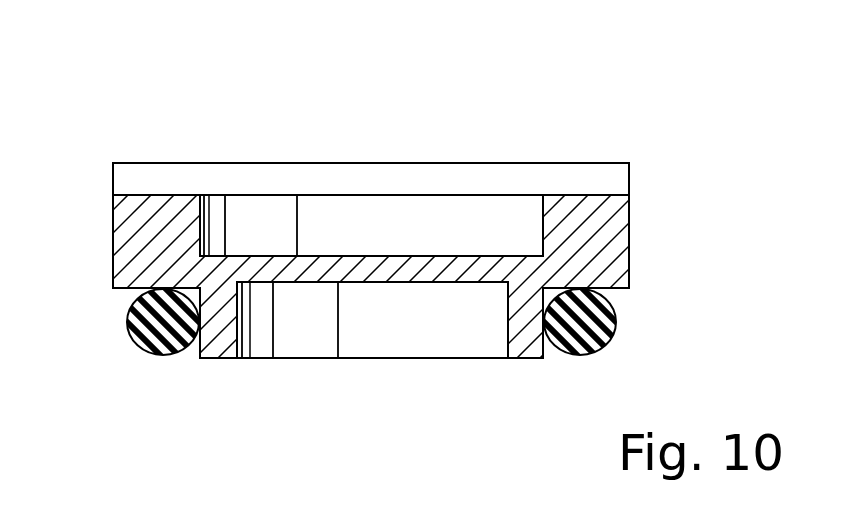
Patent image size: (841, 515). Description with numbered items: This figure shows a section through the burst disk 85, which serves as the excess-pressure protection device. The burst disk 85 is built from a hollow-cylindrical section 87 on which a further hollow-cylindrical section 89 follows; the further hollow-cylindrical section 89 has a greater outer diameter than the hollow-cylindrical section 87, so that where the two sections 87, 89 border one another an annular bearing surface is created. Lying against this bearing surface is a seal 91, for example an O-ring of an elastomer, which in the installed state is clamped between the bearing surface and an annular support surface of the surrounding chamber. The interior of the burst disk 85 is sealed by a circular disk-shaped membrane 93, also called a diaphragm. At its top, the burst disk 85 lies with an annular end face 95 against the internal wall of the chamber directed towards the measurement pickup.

The burst disk 85 is at (140, 110).
The hollow-cylindrical section 87 is at (520, 337).
The further hollow-cylindrical section 89 is at (597, 223).
The seal 91 is at (583, 322).
The membrane 93 is at (285, 267).
The annular end face 95 is at (583, 163).